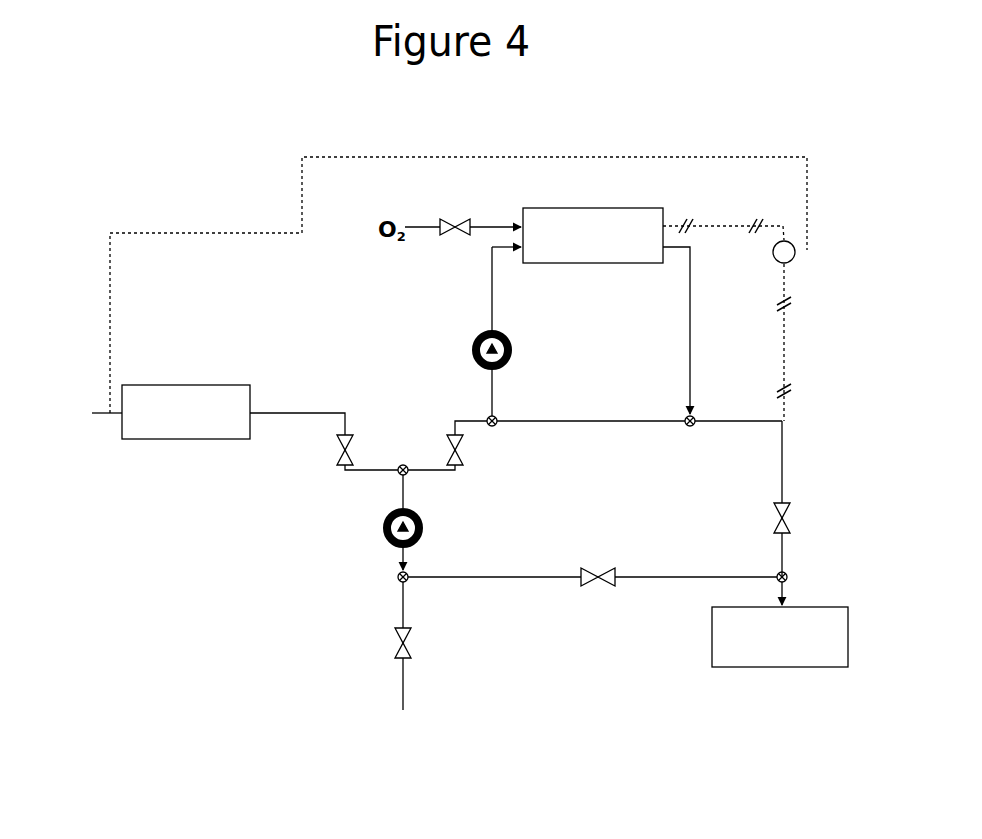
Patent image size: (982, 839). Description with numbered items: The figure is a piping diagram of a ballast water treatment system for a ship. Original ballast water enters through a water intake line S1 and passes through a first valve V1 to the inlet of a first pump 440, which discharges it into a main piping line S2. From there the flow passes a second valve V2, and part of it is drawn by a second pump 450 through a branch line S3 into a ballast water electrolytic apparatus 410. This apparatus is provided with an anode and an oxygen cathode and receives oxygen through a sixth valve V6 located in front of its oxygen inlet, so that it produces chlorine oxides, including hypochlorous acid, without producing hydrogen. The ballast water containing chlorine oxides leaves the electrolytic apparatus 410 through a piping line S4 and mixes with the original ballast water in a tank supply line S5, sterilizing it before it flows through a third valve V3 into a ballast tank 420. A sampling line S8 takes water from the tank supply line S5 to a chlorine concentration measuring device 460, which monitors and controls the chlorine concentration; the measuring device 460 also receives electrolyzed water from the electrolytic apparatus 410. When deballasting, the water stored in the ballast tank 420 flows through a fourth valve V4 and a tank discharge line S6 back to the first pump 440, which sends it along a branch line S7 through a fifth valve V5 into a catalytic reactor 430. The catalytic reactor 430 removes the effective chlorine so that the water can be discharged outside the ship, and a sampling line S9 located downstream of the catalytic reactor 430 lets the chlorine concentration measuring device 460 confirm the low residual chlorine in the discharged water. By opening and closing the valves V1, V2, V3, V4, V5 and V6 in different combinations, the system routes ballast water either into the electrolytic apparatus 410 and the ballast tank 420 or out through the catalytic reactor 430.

The ballast water electrolytic apparatus 410 is at (575, 208).
The ballast tank 420 is at (768, 668).
The catalytic reactor 430 is at (178, 440).
The first pump 440 is at (424, 525).
The second pump 450 is at (513, 346).
The chlorine concentration measuring device 460 is at (792, 260).
The water intake line S1 is at (416, 684).
The main piping line S2 is at (424, 462).
The branch line S3 is at (506, 331).
The piping line S4 is at (689, 330).
The tank supply line S5 is at (639, 408).
The tank discharge line S6 is at (592, 566).
The branch line S7 is at (371, 462).
The sampling line S8 is at (799, 355).
The sampling line S9 is at (221, 220).
The first valve V1 is at (416, 620).
The second valve V2 is at (447, 445).
The third valve V3 is at (794, 499).
The fourth valve V4 is at (598, 568).
The fifth valve V5 is at (324, 441).
The sixth valve V6 is at (463, 217).